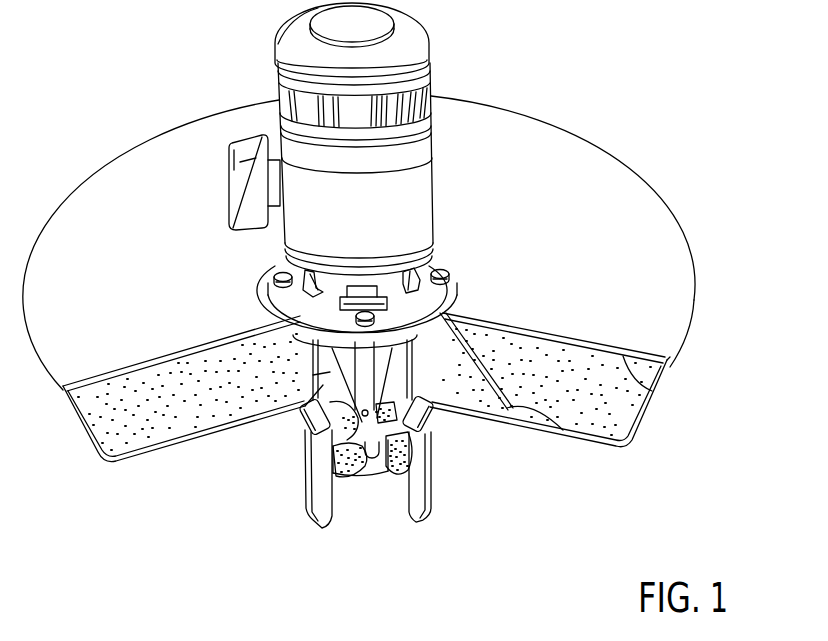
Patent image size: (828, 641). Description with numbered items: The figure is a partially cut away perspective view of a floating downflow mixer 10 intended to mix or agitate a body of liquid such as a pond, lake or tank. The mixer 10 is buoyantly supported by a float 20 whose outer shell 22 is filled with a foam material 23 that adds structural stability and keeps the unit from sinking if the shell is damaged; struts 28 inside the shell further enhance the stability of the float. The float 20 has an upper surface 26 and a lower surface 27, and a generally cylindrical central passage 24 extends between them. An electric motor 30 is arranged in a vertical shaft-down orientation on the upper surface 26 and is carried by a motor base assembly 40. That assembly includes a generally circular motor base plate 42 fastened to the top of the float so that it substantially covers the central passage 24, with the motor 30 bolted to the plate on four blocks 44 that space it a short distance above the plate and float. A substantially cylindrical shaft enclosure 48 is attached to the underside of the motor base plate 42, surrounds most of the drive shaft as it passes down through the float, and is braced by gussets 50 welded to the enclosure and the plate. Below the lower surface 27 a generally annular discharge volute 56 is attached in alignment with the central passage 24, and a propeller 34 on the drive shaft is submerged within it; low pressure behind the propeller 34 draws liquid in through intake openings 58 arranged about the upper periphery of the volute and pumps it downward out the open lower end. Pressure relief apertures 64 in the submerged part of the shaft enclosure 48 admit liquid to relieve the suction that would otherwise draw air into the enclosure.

The floating mixer 10 is at (546, 49).
The float 20 is at (592, 162).
The outer shell 22 is at (662, 389).
The foam material 23 is at (628, 398).
The central passage 24 is at (333, 372).
The upper surface 26 is at (675, 294).
The lower surface 27 is at (148, 458).
The struts 28 is at (563, 430).
The electric motor 30 is at (408, 30).
The propeller 34 is at (388, 483).
The motor base assembly 40 is at (438, 258).
The motor base plate 42 is at (310, 288).
The blocks 44 is at (343, 300).
The shaft enclosure 48 is at (355, 402).
The gussets 50 is at (383, 358).
The discharge volute 56 is at (332, 507).
The intake openings 58 is at (423, 432).
The pressure relief apertures 64 is at (412, 457).